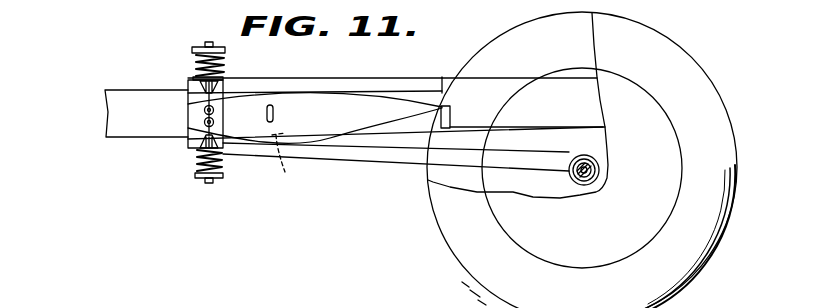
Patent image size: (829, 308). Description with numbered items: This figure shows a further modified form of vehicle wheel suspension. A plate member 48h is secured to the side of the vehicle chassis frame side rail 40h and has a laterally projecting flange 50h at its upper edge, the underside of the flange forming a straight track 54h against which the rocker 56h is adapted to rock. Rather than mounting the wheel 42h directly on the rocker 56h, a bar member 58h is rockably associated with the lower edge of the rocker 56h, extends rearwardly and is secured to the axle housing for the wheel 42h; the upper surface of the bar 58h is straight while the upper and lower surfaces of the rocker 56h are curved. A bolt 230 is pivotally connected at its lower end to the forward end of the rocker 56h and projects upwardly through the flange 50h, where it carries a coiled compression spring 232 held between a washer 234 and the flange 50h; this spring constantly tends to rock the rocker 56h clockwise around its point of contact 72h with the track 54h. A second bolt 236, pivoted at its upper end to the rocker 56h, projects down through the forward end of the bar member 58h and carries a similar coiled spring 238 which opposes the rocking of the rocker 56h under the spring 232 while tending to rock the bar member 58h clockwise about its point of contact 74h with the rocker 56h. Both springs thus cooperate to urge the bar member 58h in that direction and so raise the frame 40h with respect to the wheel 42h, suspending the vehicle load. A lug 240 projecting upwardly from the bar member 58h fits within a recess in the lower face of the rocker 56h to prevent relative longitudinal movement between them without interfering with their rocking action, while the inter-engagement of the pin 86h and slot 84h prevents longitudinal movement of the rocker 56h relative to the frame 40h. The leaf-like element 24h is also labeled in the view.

The vehicle chassis frame side rail 40h is at (105, 109).
The bolt 230 is at (188, 100).
The second bolt 236 is at (188, 127).
The coiled spring 238 is at (198, 156).
The washer 234 is at (192, 48).
The coiled compression spring 232 is at (226, 62).
The point of contact 72h is at (296, 95).
The laterally projecting flange 50h is at (334, 83).
The track 54h is at (401, 78).
The plate member 48h is at (449, 106).
The rocker 56h is at (315, 110).
The leaf spring 24h is at (290, 130).
The lug 240 is at (302, 168).
The pin 86h is at (276, 116).
The slot 84h is at (234, 114).
The point of contact 74h is at (252, 140).
The bar member 58h is at (345, 150).
The wheel 42h is at (700, 273).